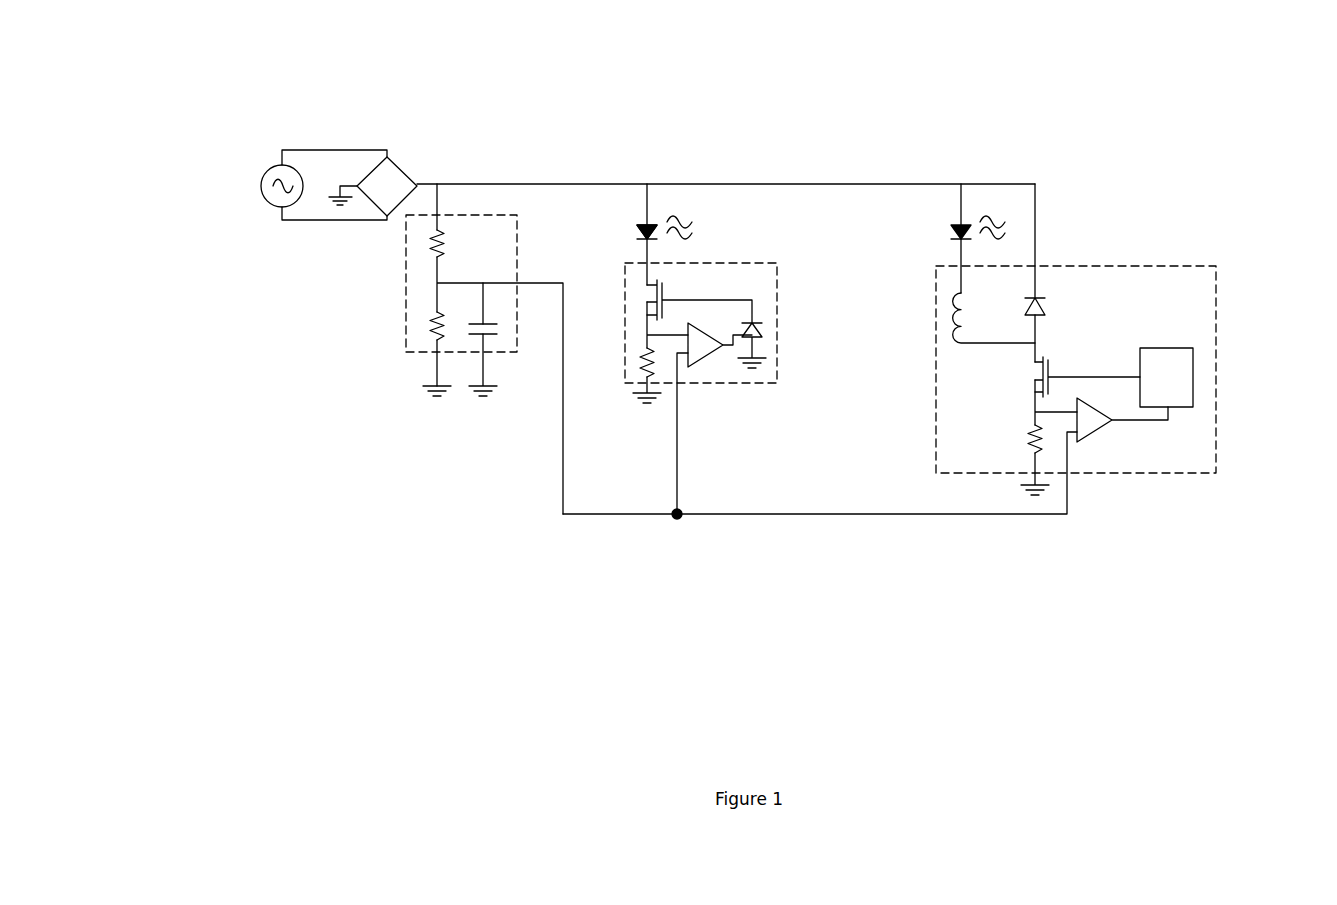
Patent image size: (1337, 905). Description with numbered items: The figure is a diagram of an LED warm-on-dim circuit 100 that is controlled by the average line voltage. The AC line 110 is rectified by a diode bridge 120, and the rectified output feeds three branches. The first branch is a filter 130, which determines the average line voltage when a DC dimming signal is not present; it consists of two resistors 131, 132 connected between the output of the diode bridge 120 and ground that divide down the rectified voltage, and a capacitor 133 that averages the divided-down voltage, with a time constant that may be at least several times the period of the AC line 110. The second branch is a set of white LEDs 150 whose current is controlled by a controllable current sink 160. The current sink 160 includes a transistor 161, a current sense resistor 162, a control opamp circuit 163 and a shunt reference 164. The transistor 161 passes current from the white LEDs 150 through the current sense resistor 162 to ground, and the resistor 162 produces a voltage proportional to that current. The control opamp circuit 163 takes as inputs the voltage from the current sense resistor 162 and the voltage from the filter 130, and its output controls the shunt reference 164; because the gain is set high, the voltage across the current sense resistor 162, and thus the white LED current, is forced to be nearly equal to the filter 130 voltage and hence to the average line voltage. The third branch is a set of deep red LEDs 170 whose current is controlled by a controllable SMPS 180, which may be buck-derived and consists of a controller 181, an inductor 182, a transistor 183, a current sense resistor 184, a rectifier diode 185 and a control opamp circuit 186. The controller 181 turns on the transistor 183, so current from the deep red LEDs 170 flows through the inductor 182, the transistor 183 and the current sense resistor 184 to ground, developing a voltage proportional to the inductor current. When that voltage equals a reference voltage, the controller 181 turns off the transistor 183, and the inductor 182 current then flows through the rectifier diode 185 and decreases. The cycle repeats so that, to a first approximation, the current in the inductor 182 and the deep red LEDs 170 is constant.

The LED warm-on-dim circuit 100 is at (963, 70).
The AC line 110 is at (252, 172).
The diode bridge 120 is at (404, 152).
The filter 130 is at (523, 248).
The resistor 131 is at (411, 253).
The resistor 132 is at (411, 330).
The capacitor 133 is at (498, 338).
The white LEDs 150 is at (632, 236).
The controllable current sink 160 is at (787, 280).
The transistor 161 is at (676, 290).
The current sense resistor 162 is at (632, 367).
The control opamp circuit 163 is at (708, 365).
The shunt reference 164 is at (768, 328).
The deep red LEDs 170 is at (945, 236).
The controllable SMPS 180 is at (1222, 330).
The controller 181 is at (1170, 338).
The inductor 182 is at (942, 320).
The transistor 183 is at (1025, 382).
The current sense resistor 184 is at (1017, 438).
The rectifier diode 185 is at (1050, 302).
The control opamp circuit 186 is at (1105, 432).